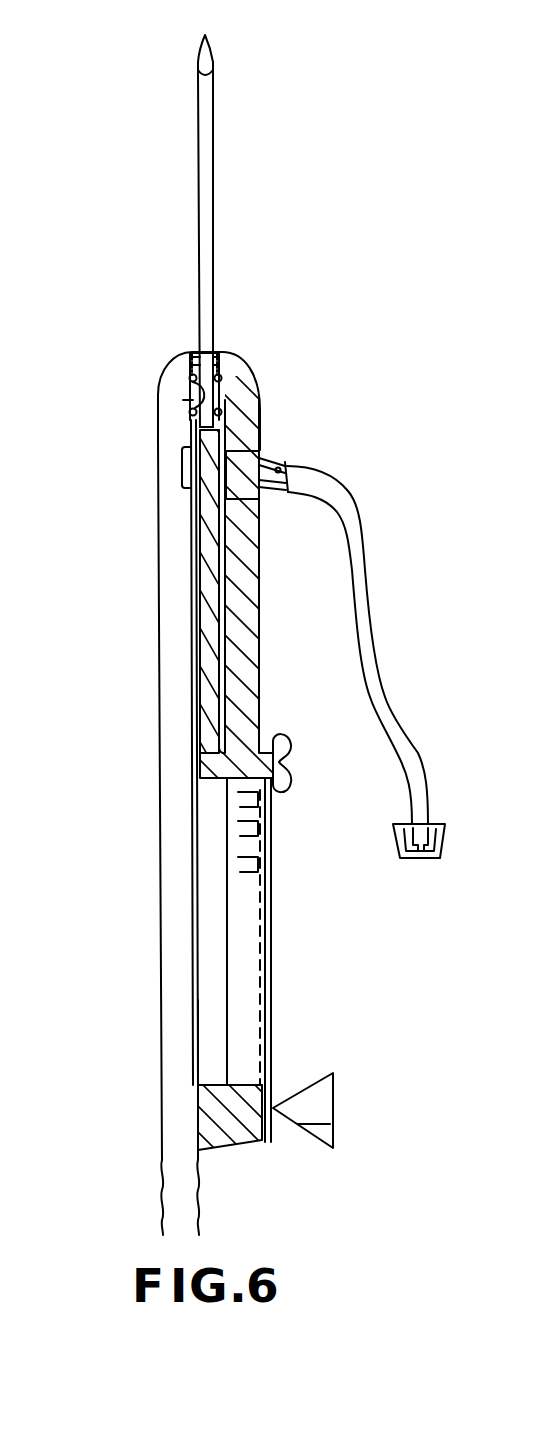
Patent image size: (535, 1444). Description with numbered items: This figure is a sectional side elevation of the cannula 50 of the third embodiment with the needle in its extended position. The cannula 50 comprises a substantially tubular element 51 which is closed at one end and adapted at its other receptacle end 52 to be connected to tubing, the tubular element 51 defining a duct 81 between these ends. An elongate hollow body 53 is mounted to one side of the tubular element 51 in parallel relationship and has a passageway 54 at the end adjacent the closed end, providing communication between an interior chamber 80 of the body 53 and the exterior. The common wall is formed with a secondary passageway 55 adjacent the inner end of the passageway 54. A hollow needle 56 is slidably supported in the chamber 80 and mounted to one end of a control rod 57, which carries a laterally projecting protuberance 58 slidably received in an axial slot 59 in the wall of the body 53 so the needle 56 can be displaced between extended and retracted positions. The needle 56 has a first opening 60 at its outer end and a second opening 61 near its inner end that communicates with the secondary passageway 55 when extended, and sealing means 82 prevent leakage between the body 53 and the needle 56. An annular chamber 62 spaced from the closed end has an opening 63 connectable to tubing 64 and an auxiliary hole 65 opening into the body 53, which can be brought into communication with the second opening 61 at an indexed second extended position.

The cannula 50 is at (96, 1022).
The tubular element 51 is at (160, 820).
The receptacle end 52 is at (200, 1186).
The elongate hollow body 53 is at (261, 606).
The passageway 54 is at (214, 352).
The secondary passageway 55 is at (183, 400).
The hollow needle 56 is at (207, 186).
The control rod 57 is at (203, 602).
The laterally projecting protuberance 58 is at (292, 765).
The axial slot 59 is at (255, 950).
The first opening 60 is at (215, 50).
The second opening 61 is at (193, 382).
The annular chamber 62 is at (248, 462).
The opening 63 is at (282, 468).
The tubing 64 is at (363, 537).
The auxiliary hole 65 is at (190, 468).
The interior chamber 80 is at (193, 680).
The duct 81 is at (181, 1028).
The sealing means 82 is at (222, 413).